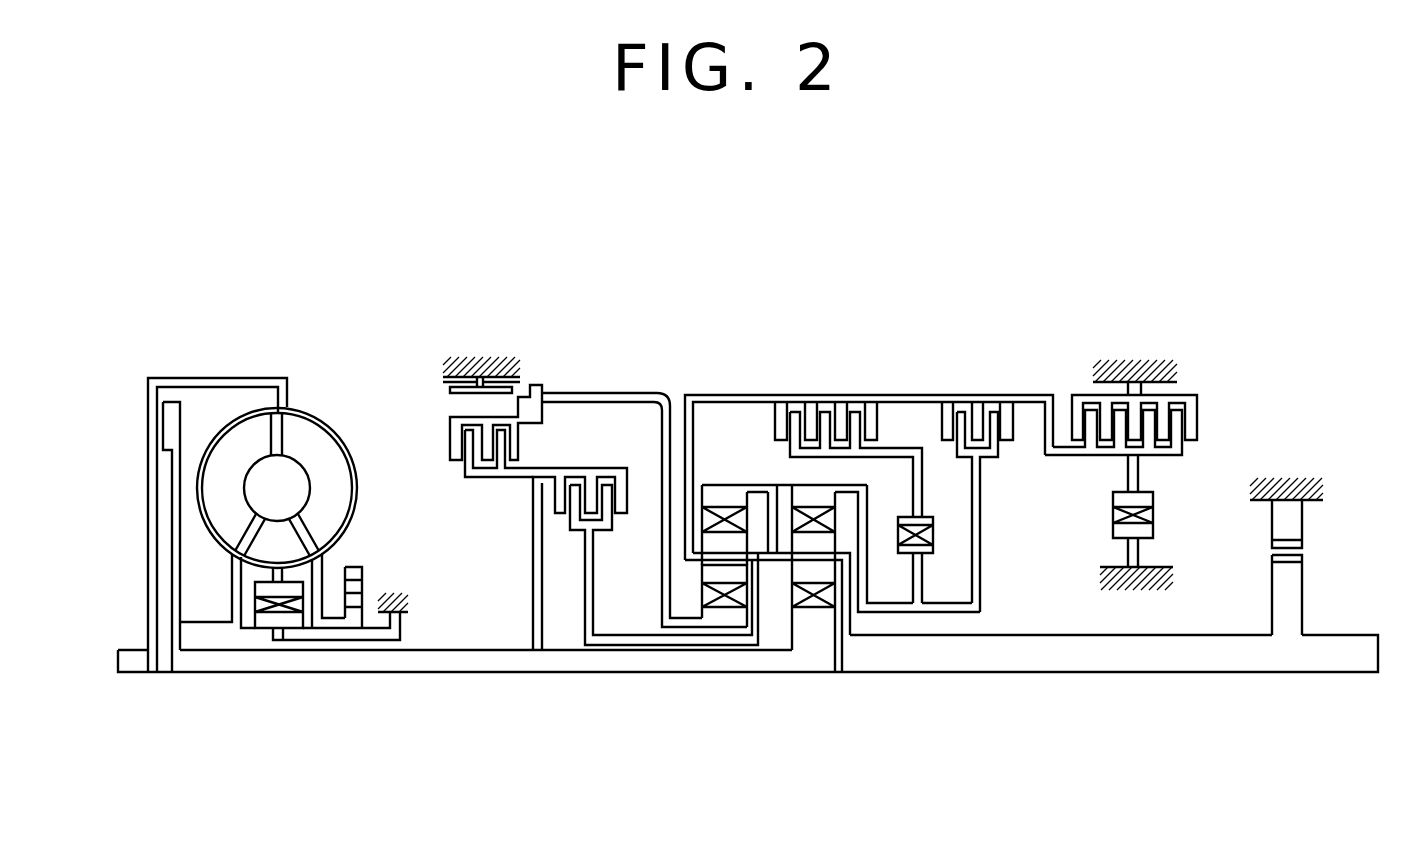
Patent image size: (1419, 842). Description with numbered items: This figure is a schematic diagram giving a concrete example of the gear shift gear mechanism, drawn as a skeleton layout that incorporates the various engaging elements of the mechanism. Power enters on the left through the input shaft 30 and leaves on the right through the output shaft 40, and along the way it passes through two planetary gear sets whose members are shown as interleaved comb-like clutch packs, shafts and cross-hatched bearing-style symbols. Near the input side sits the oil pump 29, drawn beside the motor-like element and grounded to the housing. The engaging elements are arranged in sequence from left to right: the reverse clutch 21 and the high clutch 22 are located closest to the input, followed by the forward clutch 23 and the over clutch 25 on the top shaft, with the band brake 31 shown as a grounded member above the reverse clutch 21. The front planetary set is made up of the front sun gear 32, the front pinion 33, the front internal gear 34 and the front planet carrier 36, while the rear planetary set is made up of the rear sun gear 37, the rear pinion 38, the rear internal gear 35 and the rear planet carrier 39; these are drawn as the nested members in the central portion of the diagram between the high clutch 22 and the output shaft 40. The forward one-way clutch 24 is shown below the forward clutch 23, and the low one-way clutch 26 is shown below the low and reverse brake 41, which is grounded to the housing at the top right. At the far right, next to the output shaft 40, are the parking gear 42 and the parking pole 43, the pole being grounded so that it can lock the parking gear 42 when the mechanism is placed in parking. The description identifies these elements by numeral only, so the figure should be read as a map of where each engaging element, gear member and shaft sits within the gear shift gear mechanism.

The reverse clutch 21 is at (482, 440).
The high clutch 22 is at (590, 485).
The forward clutch 23 is at (840, 417).
The forward one-way clutch 24 is at (937, 547).
The over clutch 25 is at (977, 417).
The low one-way clutch 26 is at (1153, 515).
The oil pump 29 is at (362, 600).
The input shaft 30 is at (452, 660).
The band brake 31 is at (463, 392).
The front sun gear 32 is at (712, 617).
The front pinion 33 is at (733, 570).
The front internal gear 34 is at (718, 500).
The rear internal gear 35 is at (800, 498).
The front planet carrier 36 is at (757, 602).
The rear sun gear 37 is at (820, 567).
The rear pinion 38 is at (848, 597).
The rear planet carrier 39 is at (870, 593).
The output shaft 40 is at (1049, 655).
The low and reverse brake 41 is at (1133, 410).
The parking gear 42 is at (1280, 598).
The parking pole 43 is at (1290, 518).